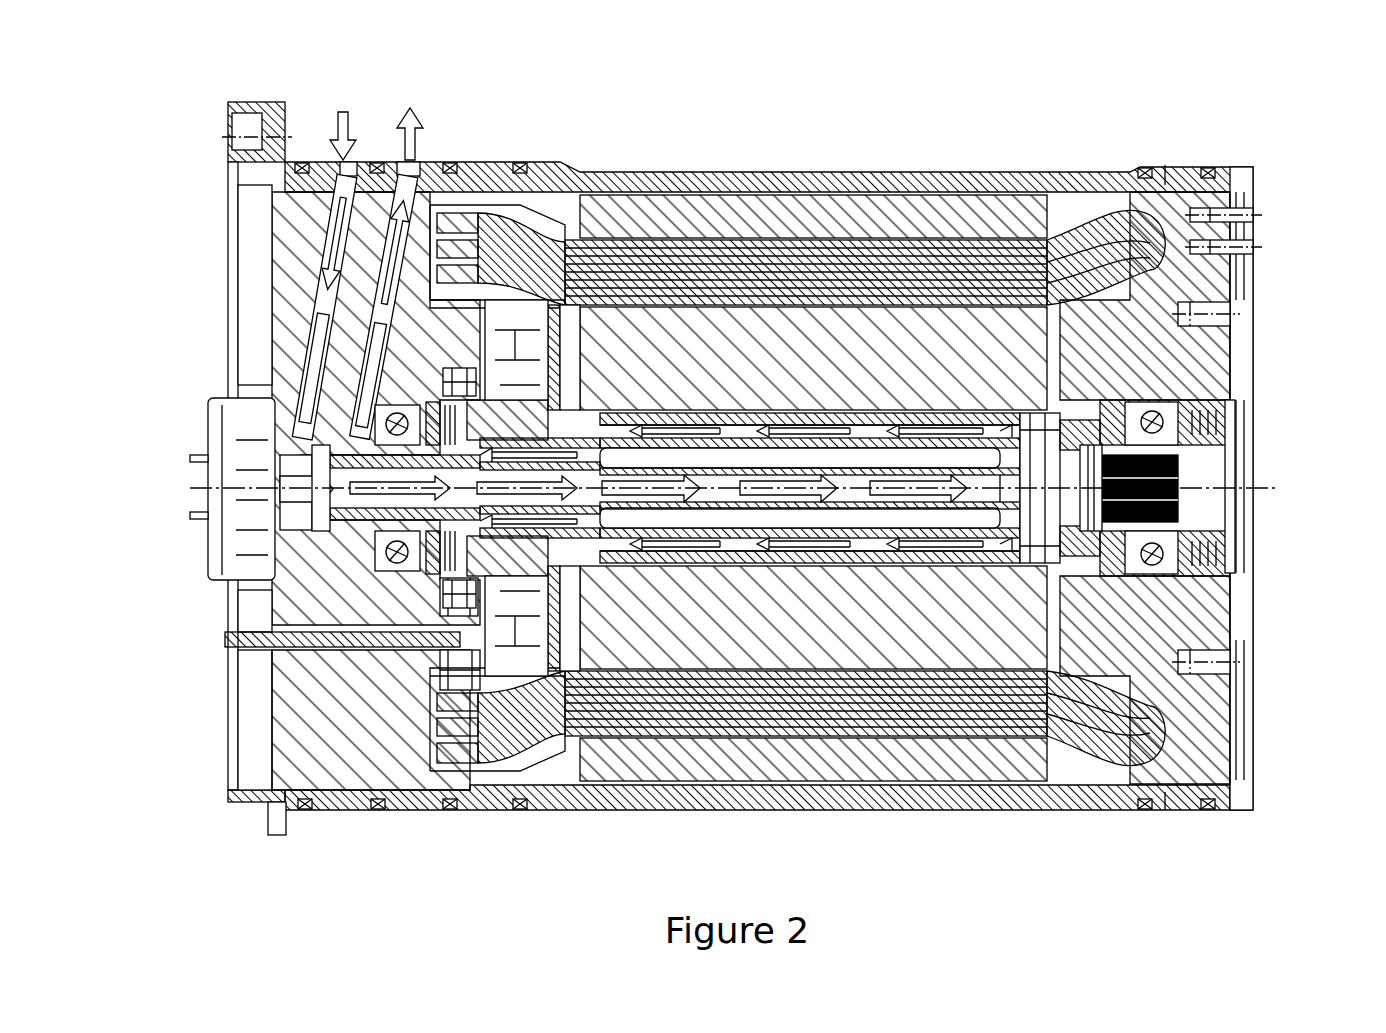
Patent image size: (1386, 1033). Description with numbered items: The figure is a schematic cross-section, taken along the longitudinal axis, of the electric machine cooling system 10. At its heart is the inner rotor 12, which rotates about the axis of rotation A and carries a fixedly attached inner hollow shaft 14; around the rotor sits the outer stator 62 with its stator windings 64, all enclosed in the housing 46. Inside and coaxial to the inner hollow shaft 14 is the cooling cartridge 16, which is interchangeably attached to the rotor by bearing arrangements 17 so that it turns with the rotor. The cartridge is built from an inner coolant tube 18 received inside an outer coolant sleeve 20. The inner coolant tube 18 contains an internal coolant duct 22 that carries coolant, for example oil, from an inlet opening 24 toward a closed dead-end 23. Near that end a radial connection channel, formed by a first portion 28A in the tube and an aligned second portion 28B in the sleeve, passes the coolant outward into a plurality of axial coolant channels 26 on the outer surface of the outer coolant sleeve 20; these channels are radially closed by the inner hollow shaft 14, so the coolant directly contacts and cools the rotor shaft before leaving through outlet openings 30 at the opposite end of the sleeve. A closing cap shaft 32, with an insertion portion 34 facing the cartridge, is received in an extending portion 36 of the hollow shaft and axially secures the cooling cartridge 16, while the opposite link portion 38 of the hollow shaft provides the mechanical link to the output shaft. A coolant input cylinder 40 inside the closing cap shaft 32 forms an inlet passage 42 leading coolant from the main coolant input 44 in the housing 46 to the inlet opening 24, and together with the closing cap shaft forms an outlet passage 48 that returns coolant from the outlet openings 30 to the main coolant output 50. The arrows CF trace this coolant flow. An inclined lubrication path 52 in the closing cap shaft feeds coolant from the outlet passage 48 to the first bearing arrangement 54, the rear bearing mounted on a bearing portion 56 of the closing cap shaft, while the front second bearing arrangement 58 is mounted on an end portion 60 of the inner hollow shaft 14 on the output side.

The electric machine cooling system 10 is at (1040, 107).
The inner rotor 12 is at (1075, 207).
The inner hollow shaft 14 is at (810, 215).
The cooling cartridge 16 is at (990, 325).
The bearing arrangements 17 is at (1112, 760).
The inner coolant tube 18 is at (720, 645).
The outer coolant sleeve 20 is at (848, 548).
The internal coolant duct 22 is at (935, 578).
The closed dead-end 23 is at (1185, 520).
The inlet opening 24 is at (603, 682).
The coolant channels 26 is at (1005, 642).
The first portion of connection channel 28A is at (1235, 360).
The second portion of connection channel 28B is at (1200, 290).
The outlet opening 30 is at (565, 748).
The closing cap shaft 32 is at (452, 682).
The insertion portion 34 is at (604, 395).
The extending portion 36 is at (688, 402).
The link portion 38 is at (1165, 592).
The coolant input cylinder 40 is at (285, 592).
The inlet passage 42 is at (227, 642).
The main coolant input 44 is at (339, 175).
The housing 46 is at (290, 242).
The outlet passage 48 is at (476, 702).
The main coolant output 50 is at (401, 173).
The lubrication path 52 is at (505, 380).
The first bearing arrangement 54 is at (436, 392).
The bearing portion 56 is at (472, 395).
The second bearing arrangement 58 is at (1180, 372).
The end portion 60 is at (1215, 408).
The outer stator 62 is at (878, 250).
The stator windings 64 is at (958, 300).
The axis of rotation A is at (1263, 488).
The coolant flow arrows CF is at (287, 395).